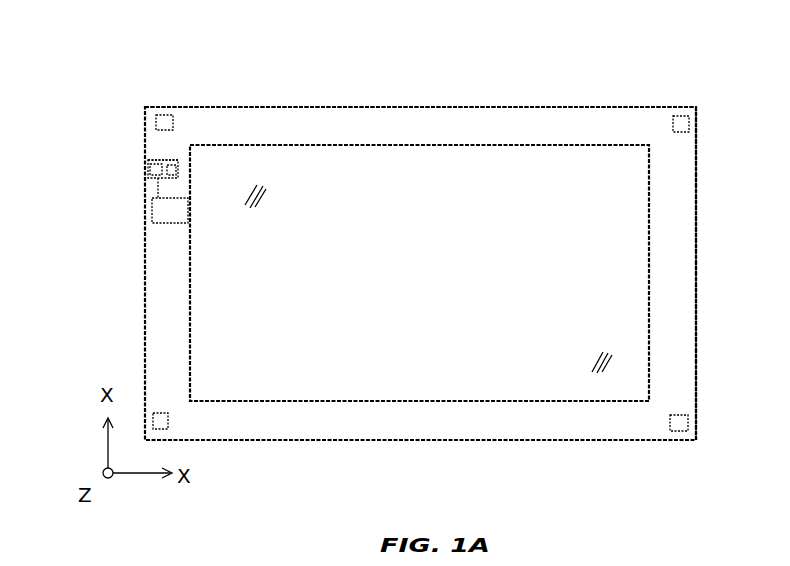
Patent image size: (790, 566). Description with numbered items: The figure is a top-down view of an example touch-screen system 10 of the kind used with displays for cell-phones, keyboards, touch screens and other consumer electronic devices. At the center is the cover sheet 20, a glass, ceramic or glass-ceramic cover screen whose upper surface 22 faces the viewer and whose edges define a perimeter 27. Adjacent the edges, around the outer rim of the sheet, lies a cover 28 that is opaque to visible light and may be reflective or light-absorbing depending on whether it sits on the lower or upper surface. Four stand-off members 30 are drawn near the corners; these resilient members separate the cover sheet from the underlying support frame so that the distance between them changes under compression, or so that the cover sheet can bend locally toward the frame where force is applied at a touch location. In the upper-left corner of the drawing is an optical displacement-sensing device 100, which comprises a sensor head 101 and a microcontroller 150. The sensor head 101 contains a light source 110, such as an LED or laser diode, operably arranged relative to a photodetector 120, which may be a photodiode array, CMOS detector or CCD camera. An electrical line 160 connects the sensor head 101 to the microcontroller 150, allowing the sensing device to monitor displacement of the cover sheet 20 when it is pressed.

The touch-screen system 10 is at (178, 60).
The cover sheet 20 is at (612, 197).
The upper surface 22 is at (627, 245).
The perimeter 27 is at (702, 333).
The cover 28 is at (480, 120).
The stand-off member 30 is at (162, 115).
The optical displacement-sensing device 100 is at (87, 163).
The sensor head 101 is at (172, 160).
The light source 110 is at (157, 168).
The photodetector 120 is at (175, 170).
The microcontroller 150 is at (152, 210).
The electrical line 160 is at (158, 188).